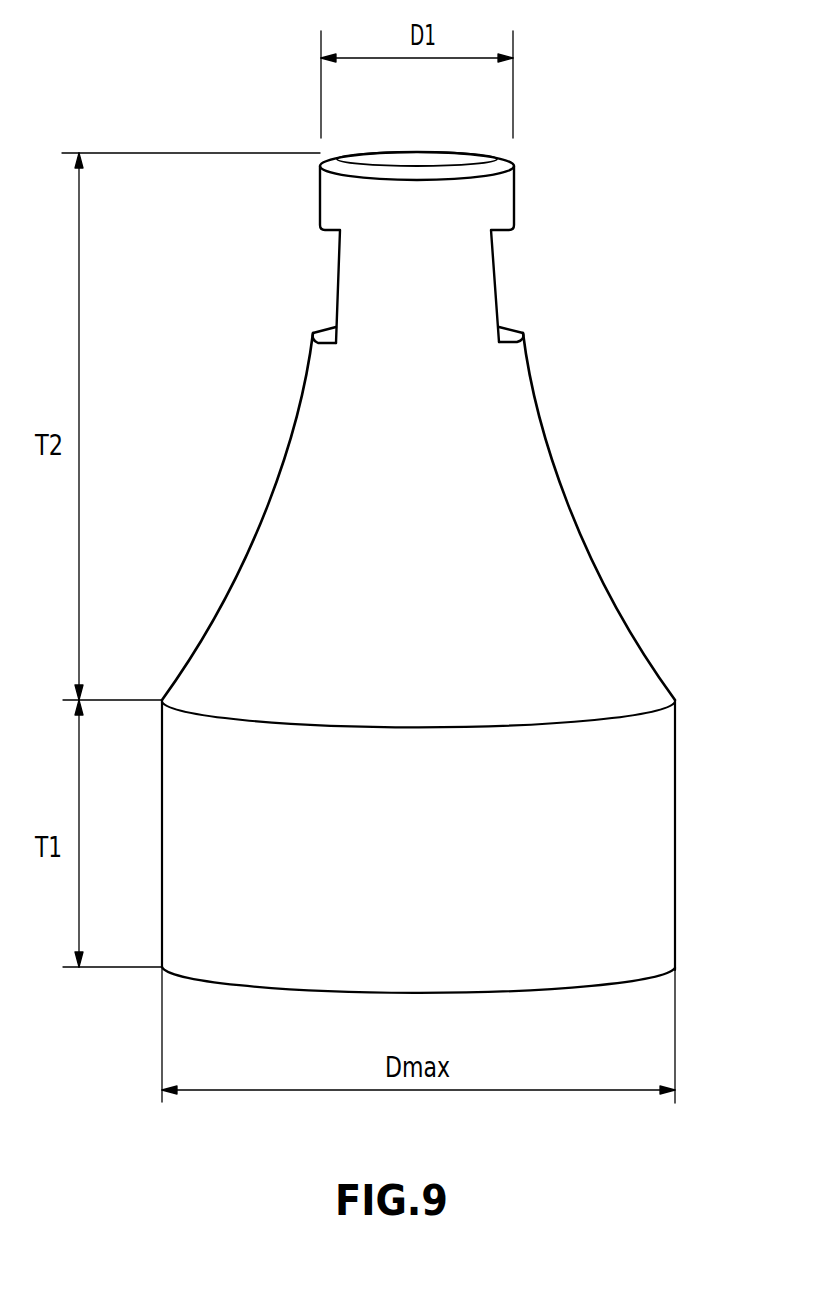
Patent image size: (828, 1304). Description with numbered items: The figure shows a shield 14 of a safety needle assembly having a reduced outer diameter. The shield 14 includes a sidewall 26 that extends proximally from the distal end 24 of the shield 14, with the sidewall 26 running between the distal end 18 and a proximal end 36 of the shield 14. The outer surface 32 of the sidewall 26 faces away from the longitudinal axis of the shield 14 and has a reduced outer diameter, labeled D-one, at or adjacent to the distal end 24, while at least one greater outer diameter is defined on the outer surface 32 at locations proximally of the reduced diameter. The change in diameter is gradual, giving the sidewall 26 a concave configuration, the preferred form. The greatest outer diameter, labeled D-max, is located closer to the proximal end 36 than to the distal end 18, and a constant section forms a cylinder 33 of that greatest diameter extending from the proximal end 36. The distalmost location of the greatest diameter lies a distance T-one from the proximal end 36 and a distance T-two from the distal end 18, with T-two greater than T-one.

The shield 14 is at (583, 422).
The distal end 18 is at (386, 150).
The distal end 24 is at (473, 150).
The sidewall 26 is at (250, 528).
The outer surface 32 is at (572, 575).
The cylinder 33 is at (425, 900).
The proximal end 36 is at (547, 996).